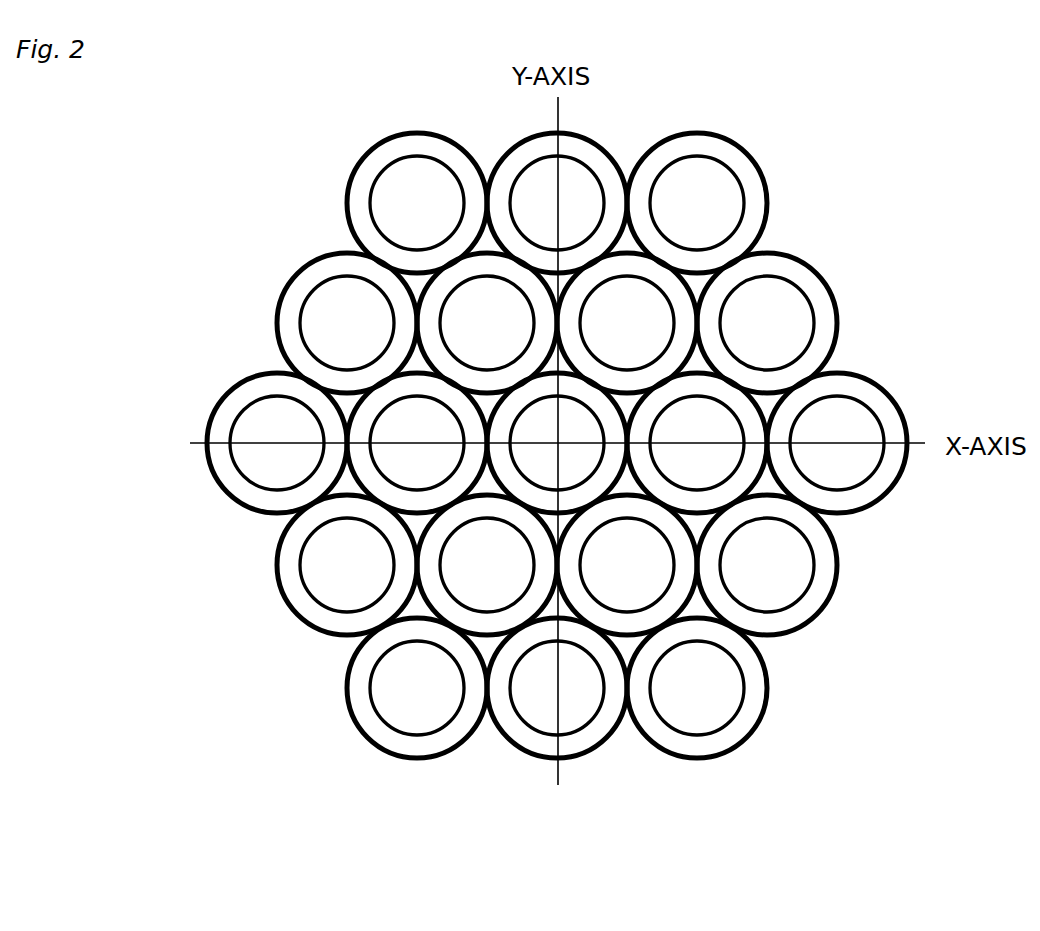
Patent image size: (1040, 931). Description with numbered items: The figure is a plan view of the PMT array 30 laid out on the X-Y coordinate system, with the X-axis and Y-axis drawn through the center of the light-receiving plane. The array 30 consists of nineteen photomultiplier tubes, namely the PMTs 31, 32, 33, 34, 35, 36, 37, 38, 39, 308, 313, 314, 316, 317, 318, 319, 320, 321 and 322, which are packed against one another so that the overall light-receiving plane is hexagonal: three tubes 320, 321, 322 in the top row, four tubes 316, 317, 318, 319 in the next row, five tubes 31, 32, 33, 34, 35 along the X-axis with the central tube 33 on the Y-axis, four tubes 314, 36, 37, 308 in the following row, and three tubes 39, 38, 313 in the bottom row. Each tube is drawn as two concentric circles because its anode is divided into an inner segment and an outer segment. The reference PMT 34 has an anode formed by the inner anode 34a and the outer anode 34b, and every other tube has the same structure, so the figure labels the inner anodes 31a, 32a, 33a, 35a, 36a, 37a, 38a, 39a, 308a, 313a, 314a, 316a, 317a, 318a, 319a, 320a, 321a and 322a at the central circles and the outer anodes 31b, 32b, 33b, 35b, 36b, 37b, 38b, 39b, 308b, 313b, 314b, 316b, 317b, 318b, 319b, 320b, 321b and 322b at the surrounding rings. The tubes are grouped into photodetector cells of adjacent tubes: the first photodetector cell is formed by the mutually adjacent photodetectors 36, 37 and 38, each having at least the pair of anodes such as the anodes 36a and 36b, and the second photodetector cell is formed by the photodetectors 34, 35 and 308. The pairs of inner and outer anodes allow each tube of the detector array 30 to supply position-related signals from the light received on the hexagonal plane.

The PMT array 30 is at (200, 290).
The photomultiplier 31 is at (242, 436).
The inner anode 31a is at (240, 455).
The outer anode 31b is at (233, 483).
The photomultiplier 32 is at (400, 367).
The inner anode 32a is at (388, 483).
The outer anode 32b is at (440, 493).
The photomultiplier 33 is at (490, 408).
The inner anode 33a is at (578, 465).
The outer anode 33b is at (613, 460).
The photomultiplier 34 is at (632, 408).
The inner segment (anode) 34a is at (730, 427).
The outer segment (anode) 34b is at (747, 480).
The photomultiplier 35 is at (870, 421).
The inner anode 35a is at (868, 456).
The outer anode 35b is at (893, 405).
The photomultiplier 36 is at (420, 603).
The inner anode 36a is at (450, 575).
The outer anode 36b is at (465, 622).
The photomultiplier 37 is at (625, 642).
The inner anode 37a is at (590, 570).
The outer anode 37b is at (602, 620).
The photomultiplier 38 is at (584, 725).
The inner anode 38a is at (567, 723).
The outer anode 38b is at (603, 723).
The photomultiplier 39 is at (405, 723).
The inner anode 39a is at (380, 692).
The outer anode 39b is at (457, 730).
The photomultiplier 308 is at (702, 602).
The inner anode 308a is at (777, 595).
The outer anode 308b is at (832, 592).
The photomultiplier 313 is at (744, 715).
The inner anode 313a is at (705, 718).
The outer anode 313b is at (748, 703).
The photomultiplier 314 is at (373, 612).
The inner anode 314a is at (310, 568).
The outer anode 314b is at (298, 603).
The photomultiplier 316 is at (360, 372).
The inner anode 316a is at (328, 297).
The outer anode 316b is at (295, 303).
The photomultiplier 317 is at (525, 383).
The inner anode 317a is at (452, 313).
The outer anode 317b is at (455, 370).
The photomultiplier 318 is at (676, 383).
The inner anode 318a is at (650, 303).
The outer anode 318b is at (665, 372).
The photomultiplier 319 is at (809, 290).
The inner anode 319a is at (783, 290).
The outer anode 319b is at (823, 298).
The photomultiplier 320 is at (378, 164).
The inner anode 320a is at (428, 165).
The outer anode 320b is at (363, 175).
The photomultiplier 321 is at (564, 180).
The inner anode 321a is at (570, 175).
The outer anode 321b is at (612, 173).
The photomultiplier 322 is at (752, 177).
The inner anode 322a is at (728, 178).
The outer anode 322b is at (757, 193).